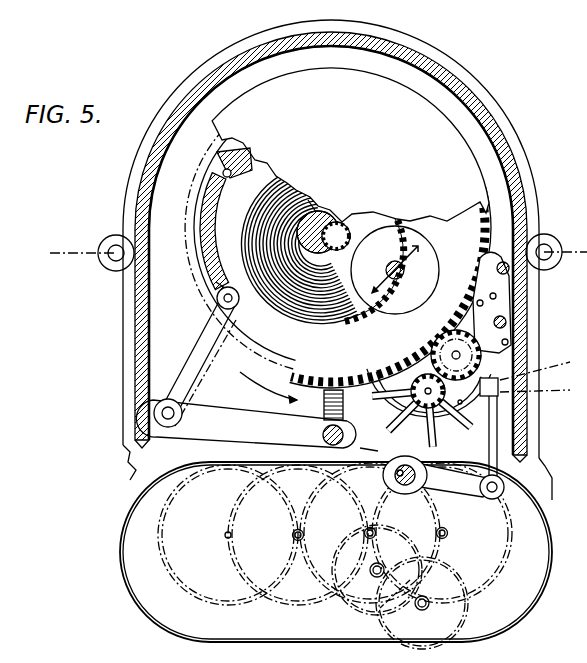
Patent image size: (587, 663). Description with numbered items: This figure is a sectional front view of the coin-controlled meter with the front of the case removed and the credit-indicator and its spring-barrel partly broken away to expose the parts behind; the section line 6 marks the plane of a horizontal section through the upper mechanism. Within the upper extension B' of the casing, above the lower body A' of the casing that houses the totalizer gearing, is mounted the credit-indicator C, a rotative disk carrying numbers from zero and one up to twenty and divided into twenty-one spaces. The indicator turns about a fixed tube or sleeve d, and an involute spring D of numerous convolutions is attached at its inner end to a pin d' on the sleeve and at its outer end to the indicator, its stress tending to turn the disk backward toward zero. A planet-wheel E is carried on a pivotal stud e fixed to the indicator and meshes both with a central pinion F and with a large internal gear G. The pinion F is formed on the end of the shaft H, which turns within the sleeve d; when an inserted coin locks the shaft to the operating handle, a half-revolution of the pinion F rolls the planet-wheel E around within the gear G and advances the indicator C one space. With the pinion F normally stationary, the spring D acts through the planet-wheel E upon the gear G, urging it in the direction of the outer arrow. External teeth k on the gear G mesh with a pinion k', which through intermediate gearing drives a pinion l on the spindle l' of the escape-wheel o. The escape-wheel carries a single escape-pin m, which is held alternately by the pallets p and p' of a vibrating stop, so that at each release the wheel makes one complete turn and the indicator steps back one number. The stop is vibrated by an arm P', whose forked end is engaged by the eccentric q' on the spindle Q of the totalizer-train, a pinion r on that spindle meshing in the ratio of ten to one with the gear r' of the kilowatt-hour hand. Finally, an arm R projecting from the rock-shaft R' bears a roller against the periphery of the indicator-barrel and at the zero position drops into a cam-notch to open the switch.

The upper portion of the casing B' is at (337, 260).
The section line 6 is at (308, 252).
The credit-indicator C is at (350, 145).
The pin d' is at (307, 182).
The sleeve d is at (323, 215).
The shaft H is at (350, 222).
The external teeth k is at (197, 353).
The arm R is at (200, 352).
The rock-shaft R' is at (291, 396).
The central pinion F is at (395, 270).
The planet-wheel E is at (387, 260).
The pivotal stud e is at (395, 278).
The involute spring D is at (299, 252).
The internal gear G is at (347, 252).
The pinion k' is at (492, 306).
The pallet p is at (535, 359).
The escape-pin m is at (535, 385).
The pallet p' is at (499, 393).
The pinion l is at (429, 408).
The spindle l' is at (425, 405).
The escape-wheel o is at (455, 413).
The pinion r is at (413, 460).
The spindle Q is at (363, 449).
The eccentric q' is at (436, 487).
The arm P' is at (470, 495).
The gear r' is at (453, 566).
The housing A' is at (336, 552).